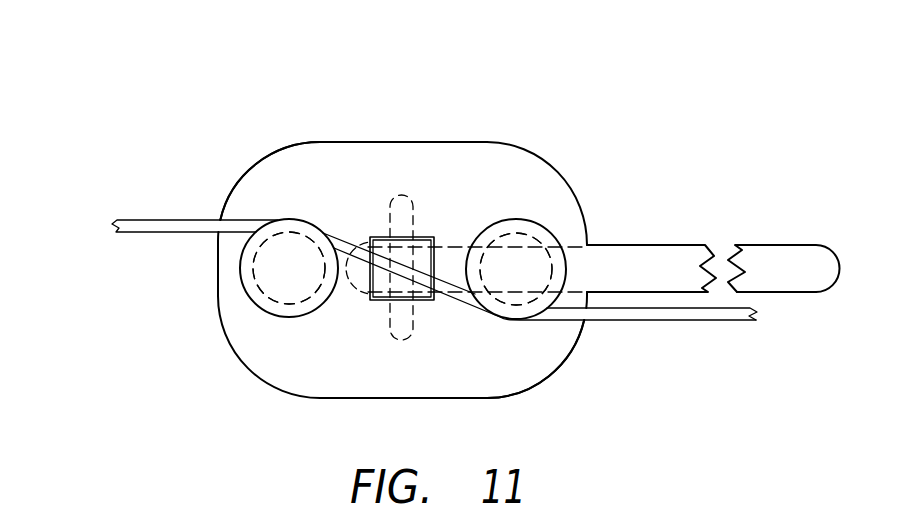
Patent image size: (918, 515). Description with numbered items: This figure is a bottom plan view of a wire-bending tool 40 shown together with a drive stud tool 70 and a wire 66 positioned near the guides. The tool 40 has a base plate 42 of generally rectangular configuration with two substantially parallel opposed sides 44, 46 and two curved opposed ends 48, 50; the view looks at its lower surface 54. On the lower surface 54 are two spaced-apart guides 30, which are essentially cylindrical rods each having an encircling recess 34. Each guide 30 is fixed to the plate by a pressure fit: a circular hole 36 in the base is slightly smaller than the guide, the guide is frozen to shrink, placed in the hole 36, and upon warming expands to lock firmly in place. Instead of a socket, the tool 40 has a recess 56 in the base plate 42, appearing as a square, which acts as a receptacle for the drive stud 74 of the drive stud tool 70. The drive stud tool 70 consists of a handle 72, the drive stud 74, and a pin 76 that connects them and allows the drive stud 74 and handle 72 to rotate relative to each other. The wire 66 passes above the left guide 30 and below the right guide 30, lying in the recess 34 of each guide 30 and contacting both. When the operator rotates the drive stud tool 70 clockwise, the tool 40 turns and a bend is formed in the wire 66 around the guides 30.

The guide 30 is at (313, 282).
The encircling recess 34 is at (265, 300).
The circular hole 36 is at (275, 318).
The tool 40 is at (557, 163).
The base plate 42 is at (543, 347).
The side 44 is at (386, 142).
The side 46 is at (418, 400).
The curved end 48 is at (216, 272).
The curved end 50 is at (592, 236).
The lower surface 54 is at (318, 195).
The recess 56 is at (373, 238).
The wire 66 is at (152, 220).
The drive stud tool 70 is at (772, 244).
The handle 72 is at (773, 293).
The drive stud 74 is at (430, 262).
The pin 76 is at (412, 200).